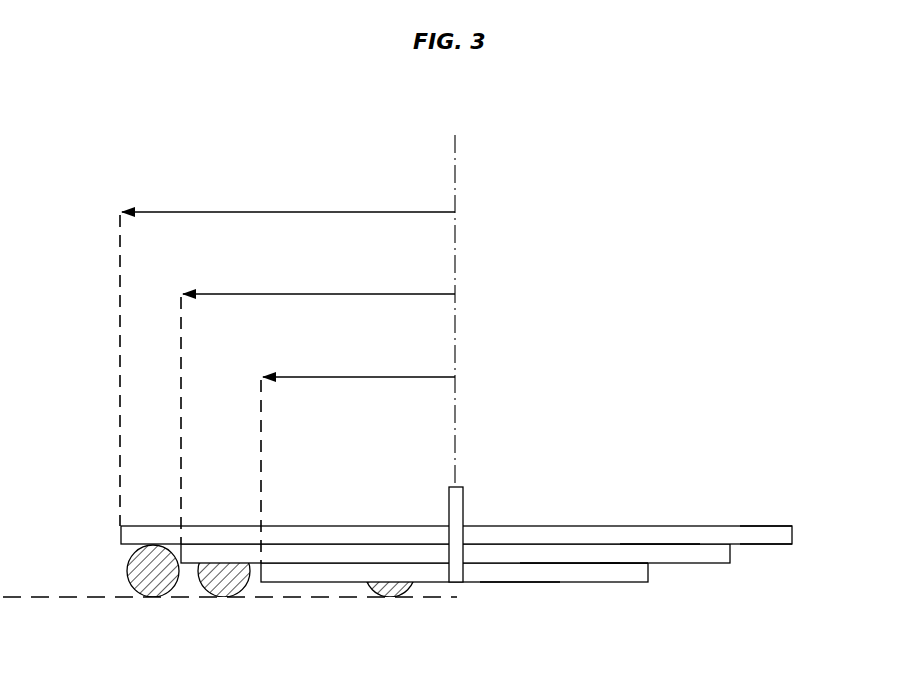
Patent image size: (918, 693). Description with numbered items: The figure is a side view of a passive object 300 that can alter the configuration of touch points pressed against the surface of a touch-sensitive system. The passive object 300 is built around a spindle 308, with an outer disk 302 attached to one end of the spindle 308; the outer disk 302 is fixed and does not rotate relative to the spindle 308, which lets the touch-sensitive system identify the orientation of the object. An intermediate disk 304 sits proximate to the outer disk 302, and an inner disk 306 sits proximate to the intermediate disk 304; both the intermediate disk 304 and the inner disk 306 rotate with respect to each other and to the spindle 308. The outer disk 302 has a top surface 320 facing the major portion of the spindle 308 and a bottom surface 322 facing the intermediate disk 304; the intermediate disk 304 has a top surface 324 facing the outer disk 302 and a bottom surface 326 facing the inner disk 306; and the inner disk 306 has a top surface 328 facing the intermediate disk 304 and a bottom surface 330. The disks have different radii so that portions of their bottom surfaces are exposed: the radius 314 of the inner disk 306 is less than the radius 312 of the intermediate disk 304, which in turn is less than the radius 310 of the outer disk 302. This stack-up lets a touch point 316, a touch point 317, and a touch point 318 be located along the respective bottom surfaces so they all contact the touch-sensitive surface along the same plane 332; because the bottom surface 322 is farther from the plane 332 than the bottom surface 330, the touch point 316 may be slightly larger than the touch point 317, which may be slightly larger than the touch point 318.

The passive object 300 is at (705, 185).
The outer disk 302 is at (787, 530).
The intermediate disk 304 is at (678, 553).
The inner disk 306 is at (602, 576).
The spindle 308 is at (465, 502).
The radius of outer disk 310 is at (248, 212).
The radius of intermediate disk 312 is at (318, 294).
The radius of inner disk 314 is at (372, 377).
The touch point 316 is at (170, 592).
The touch point 317 is at (240, 592).
The touch point 318 is at (405, 591).
The top surface 320 is at (769, 516).
The bottom surface 322 is at (778, 550).
The top surface 324 is at (651, 539).
The bottom surface 326 is at (654, 568).
The top surface 328 is at (561, 556).
The bottom surface 330 is at (523, 588).
The plane 332 is at (58, 600).